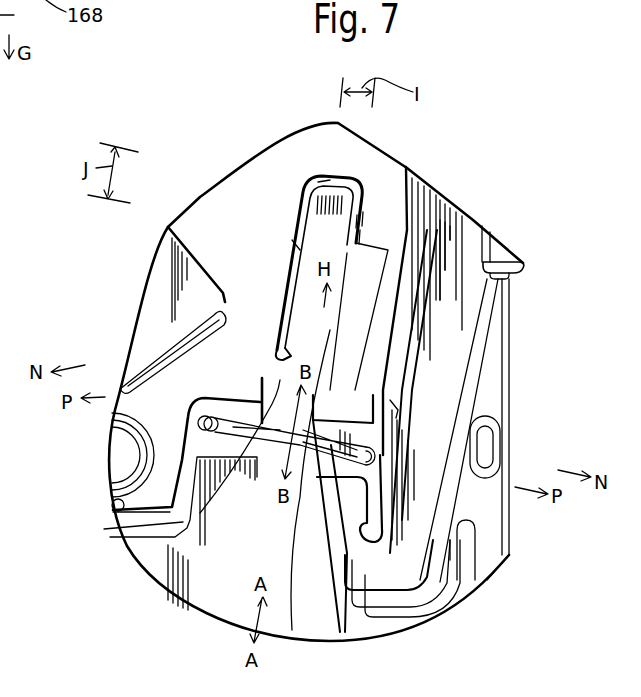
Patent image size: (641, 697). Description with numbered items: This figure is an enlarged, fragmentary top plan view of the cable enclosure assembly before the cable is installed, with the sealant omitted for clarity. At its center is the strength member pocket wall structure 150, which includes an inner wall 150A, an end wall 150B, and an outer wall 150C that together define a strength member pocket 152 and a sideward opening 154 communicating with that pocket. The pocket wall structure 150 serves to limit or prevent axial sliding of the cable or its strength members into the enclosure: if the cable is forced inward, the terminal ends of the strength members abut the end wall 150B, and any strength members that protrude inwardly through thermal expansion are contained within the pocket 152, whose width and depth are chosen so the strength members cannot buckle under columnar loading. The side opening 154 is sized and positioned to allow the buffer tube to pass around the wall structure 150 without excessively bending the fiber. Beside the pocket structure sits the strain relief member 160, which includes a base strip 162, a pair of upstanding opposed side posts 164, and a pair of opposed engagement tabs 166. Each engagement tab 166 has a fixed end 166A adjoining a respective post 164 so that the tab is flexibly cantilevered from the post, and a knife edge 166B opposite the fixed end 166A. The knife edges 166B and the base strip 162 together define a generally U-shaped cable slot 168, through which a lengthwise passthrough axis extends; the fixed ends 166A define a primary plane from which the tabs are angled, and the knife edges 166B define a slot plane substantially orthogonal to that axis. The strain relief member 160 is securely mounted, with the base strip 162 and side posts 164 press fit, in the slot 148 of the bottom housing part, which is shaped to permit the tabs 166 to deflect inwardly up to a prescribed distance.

The slot 148 is at (300, 490).
The strength member pocket wall structure 150 is at (269, 290).
The inner wall 150A is at (294, 250).
The end wall 150B is at (326, 174).
The outer wall 150C is at (368, 214).
The strength member pocket 152 is at (298, 293).
The sideward opening 154 is at (367, 297).
The strain relief member 160 is at (375, 431).
The base strip 162 is at (127, 529).
The side posts 164 is at (160, 447).
The engagement tab 166 is at (133, 490).
The fixed end 166A is at (245, 425).
The knife edge 166B is at (210, 312).
The cable slot 168 is at (324, 346).